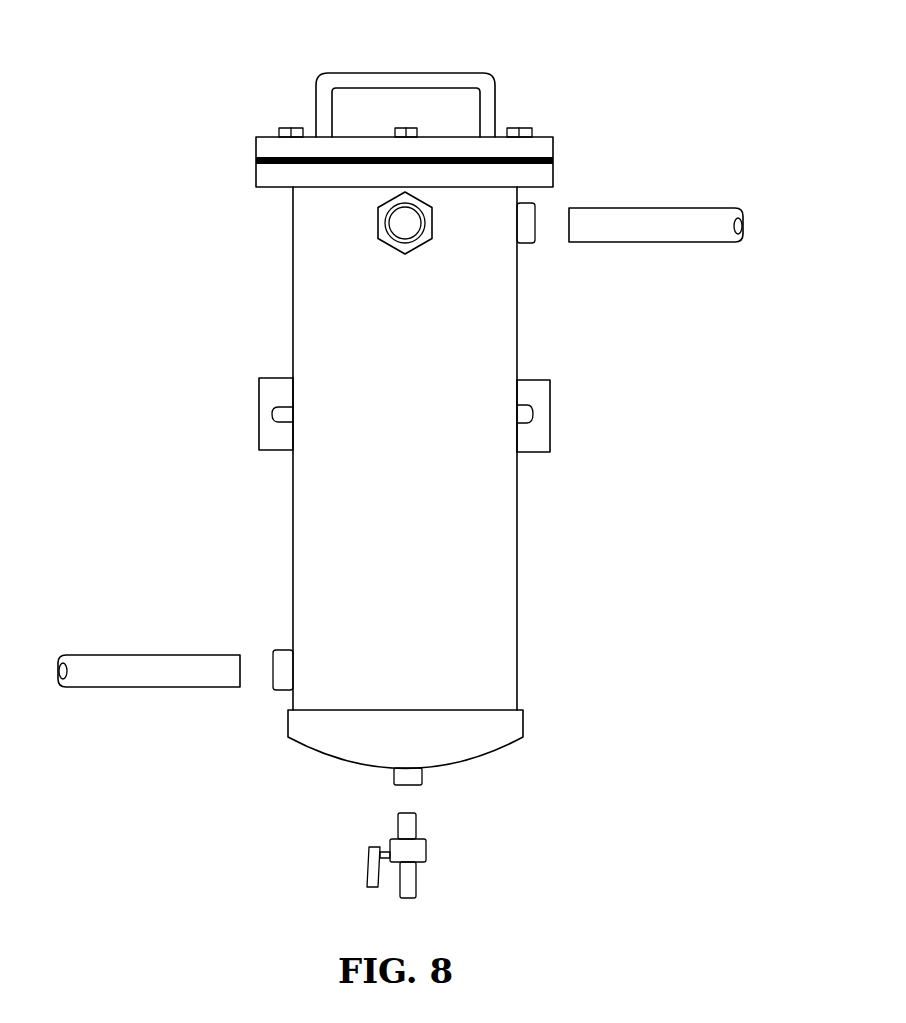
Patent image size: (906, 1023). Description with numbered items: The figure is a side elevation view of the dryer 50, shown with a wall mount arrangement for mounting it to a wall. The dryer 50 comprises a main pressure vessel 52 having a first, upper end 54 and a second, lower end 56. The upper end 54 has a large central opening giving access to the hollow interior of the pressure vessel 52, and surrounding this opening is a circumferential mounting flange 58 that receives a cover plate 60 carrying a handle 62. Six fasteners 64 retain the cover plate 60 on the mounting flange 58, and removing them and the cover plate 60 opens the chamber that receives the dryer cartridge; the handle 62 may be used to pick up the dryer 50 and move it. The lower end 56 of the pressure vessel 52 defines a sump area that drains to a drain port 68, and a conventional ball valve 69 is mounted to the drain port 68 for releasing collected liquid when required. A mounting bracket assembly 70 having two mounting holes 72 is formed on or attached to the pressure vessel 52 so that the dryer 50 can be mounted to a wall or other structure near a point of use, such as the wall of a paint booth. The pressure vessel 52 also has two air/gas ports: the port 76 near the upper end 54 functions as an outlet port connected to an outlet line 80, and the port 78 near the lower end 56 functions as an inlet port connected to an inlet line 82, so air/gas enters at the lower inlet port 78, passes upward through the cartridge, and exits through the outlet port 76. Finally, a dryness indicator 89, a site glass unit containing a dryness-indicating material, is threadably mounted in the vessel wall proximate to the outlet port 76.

The dryer 50 is at (220, 502).
The main pressure vessel 52 is at (479, 548).
The first (upper) end 54 is at (620, 160).
The second (lower) end 56 is at (560, 707).
The circumferential mounting flange 58 is at (256, 173).
The cover plate 60 is at (256, 148).
The handle 62 is at (422, 73).
The fasteners 64 is at (517, 130).
The drain port 68 is at (422, 780).
The ball valve 69 is at (426, 850).
The mounting bracket assembly 70 is at (259, 390).
The mounting holes 72 is at (283, 422).
The outlet port 76 is at (528, 243).
The inlet port 78 is at (281, 690).
The outlet line 80 is at (703, 242).
The inlet line 82 is at (117, 687).
The dryness indicator 89 is at (388, 250).